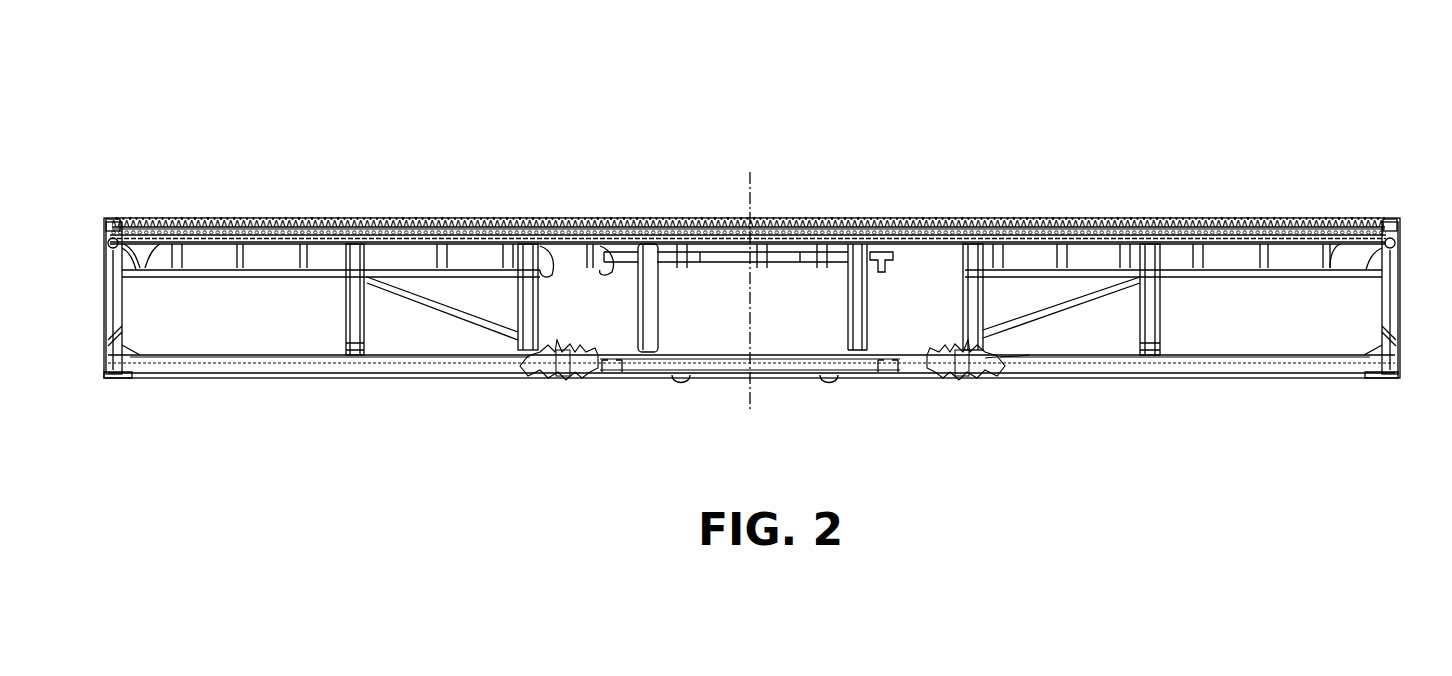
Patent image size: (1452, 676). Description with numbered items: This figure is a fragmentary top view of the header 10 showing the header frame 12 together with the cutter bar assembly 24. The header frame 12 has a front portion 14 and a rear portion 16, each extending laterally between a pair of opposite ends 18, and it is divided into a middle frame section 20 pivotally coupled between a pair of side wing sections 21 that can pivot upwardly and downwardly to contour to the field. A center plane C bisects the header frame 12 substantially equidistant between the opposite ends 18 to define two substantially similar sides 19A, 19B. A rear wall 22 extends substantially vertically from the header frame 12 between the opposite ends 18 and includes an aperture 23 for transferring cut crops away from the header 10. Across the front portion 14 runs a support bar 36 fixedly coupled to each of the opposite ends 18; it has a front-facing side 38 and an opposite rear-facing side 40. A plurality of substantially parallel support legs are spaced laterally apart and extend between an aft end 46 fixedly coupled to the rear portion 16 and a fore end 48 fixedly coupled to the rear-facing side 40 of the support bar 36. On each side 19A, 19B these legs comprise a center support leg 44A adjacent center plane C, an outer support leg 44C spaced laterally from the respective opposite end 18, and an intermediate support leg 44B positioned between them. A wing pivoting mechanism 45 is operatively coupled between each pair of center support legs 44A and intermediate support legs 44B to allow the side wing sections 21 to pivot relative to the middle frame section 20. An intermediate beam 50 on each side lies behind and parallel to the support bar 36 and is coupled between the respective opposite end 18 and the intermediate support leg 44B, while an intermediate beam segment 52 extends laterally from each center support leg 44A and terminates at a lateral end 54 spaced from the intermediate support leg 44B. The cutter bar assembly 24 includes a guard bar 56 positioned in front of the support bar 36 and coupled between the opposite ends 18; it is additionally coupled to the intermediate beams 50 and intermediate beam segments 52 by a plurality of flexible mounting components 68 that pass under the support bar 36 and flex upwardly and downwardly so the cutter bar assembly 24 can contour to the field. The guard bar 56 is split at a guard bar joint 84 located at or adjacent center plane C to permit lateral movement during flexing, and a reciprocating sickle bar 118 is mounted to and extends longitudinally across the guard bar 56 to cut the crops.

The header 10 is at (1245, 100).
The header frame 12 is at (1410, 232).
The front portion 14 is at (1390, 205).
The rear portion 16 is at (1390, 388).
The opposite ends 18 is at (108, 358).
The first side 19A is at (862, 205).
The second side 19B is at (714, 205).
The middle frame section 20 is at (908, 388).
The side wing sections 21 is at (243, 385).
The rear wall 22 is at (1055, 372).
The aperture 23 is at (850, 375).
The cutter bar assembly 24 is at (1157, 195).
The support bar 36 is at (140, 258).
The front-facing side 38 is at (155, 228).
The rear-facing side 40 is at (200, 242).
The center support leg 44A is at (646, 367).
The intermediate support leg 44B is at (527, 360).
The outer support leg 44C is at (352, 365).
The wing pivoting mechanism 45 is at (561, 388).
The aft end 46 is at (658, 342).
The fore end 48 is at (660, 248).
The intermediate beam 50 is at (457, 270).
The intermediate beam segment 52 is at (912, 258).
The lateral end 54 is at (868, 262).
The guard bar 56 is at (1370, 248).
The flexible mounting components 68 is at (1273, 262).
The guard bar joint 84 is at (762, 210).
The reciprocating sickle bar 118 is at (1295, 207).